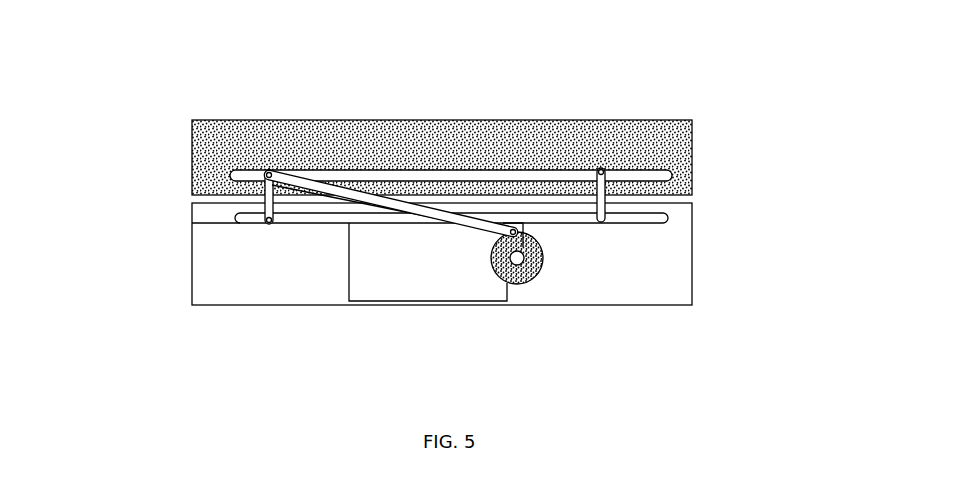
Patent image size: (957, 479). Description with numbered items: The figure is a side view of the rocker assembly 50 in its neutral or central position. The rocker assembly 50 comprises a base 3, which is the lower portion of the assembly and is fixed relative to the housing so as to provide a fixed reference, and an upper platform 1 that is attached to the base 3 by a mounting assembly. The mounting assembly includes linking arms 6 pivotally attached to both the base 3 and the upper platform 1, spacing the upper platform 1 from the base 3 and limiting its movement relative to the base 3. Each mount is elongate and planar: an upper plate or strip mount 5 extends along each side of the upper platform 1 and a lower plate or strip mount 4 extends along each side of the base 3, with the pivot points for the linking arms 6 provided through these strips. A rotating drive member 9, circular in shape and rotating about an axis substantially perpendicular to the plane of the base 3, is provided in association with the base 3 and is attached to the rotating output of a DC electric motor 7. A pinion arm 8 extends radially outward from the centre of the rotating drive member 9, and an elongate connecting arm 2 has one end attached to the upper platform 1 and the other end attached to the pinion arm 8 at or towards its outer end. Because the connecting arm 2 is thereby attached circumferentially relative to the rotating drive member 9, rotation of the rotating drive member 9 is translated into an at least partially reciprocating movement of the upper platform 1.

The upper platform 1 is at (257, 130).
The connecting arm 2 is at (310, 190).
The base 3 is at (678, 270).
The lower plate or strip mount 4 is at (667, 222).
The upper plate or strip mount 5 is at (232, 176).
The linking arm 6 is at (262, 206).
The DC electric motor 7 is at (398, 265).
The pinion arm 8 is at (512, 248).
The rotating drive member 9 is at (542, 255).
The rocker assembly 50 is at (429, 205).